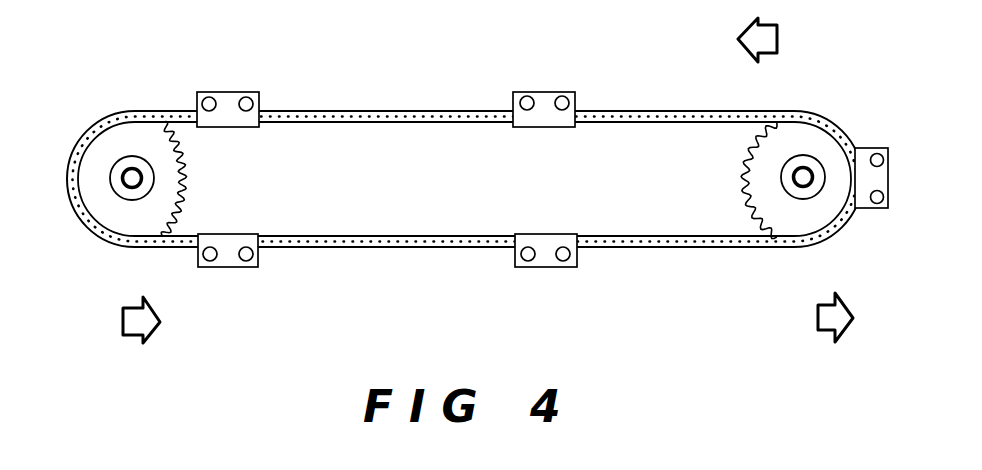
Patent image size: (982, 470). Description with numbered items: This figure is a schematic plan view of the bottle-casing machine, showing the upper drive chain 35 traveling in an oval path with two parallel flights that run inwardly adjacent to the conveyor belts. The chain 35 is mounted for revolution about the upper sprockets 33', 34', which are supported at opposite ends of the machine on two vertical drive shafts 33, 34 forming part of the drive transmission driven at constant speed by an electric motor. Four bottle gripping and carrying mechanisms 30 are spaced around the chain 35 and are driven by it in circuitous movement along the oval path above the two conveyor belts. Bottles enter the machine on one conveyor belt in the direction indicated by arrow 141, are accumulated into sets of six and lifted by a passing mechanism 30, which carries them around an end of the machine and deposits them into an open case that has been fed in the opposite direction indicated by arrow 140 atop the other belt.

The bottle gripping and carrying mechanism 30 is at (260, 93).
The vertical drive shaft 33 is at (801, 163).
The upper sprocket 33' is at (730, 181).
The vertical drive shaft 34 is at (131, 164).
The upper sprocket 34' is at (199, 179).
The upper drive chain 35 is at (398, 110).
The arrow 140 is at (150, 335).
The arrow 141 is at (777, 25).